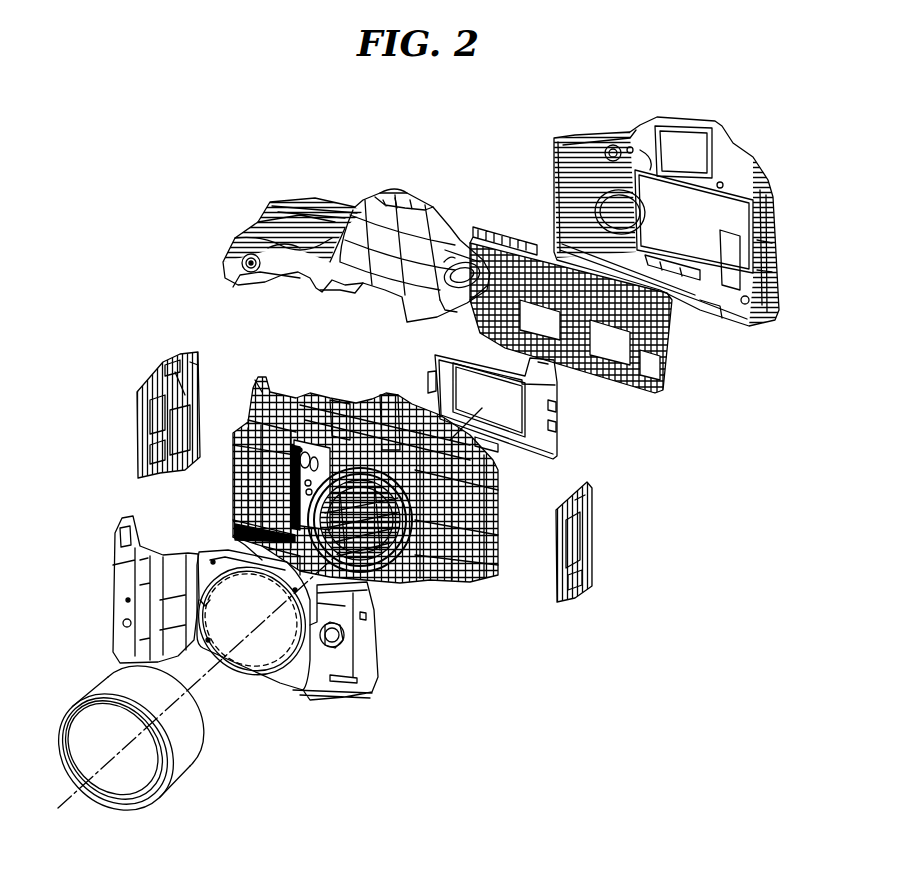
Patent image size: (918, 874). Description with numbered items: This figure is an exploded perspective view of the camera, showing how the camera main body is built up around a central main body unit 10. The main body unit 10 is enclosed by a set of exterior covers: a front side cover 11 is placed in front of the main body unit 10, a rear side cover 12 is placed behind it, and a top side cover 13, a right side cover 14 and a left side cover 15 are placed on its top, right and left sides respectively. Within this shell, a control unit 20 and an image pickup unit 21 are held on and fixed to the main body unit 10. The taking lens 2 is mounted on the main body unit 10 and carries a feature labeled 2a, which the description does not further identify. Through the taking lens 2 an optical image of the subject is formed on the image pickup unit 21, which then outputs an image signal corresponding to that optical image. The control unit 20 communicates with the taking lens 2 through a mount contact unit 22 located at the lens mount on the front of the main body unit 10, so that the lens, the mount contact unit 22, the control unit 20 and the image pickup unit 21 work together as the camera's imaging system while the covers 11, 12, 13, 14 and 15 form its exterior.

The taking lens 2 is at (185, 768).
The optical axis 2a is at (73, 798).
The main body unit 10 is at (478, 568).
The front side cover 11 is at (373, 660).
The rear side cover 12 is at (783, 262).
The top side cover 13 is at (368, 206).
The right side cover 14 is at (160, 360).
The left side cover 15 is at (597, 536).
The control unit 20 is at (678, 364).
The image pickup unit 21 is at (560, 423).
The mount contact unit 22 is at (396, 575).